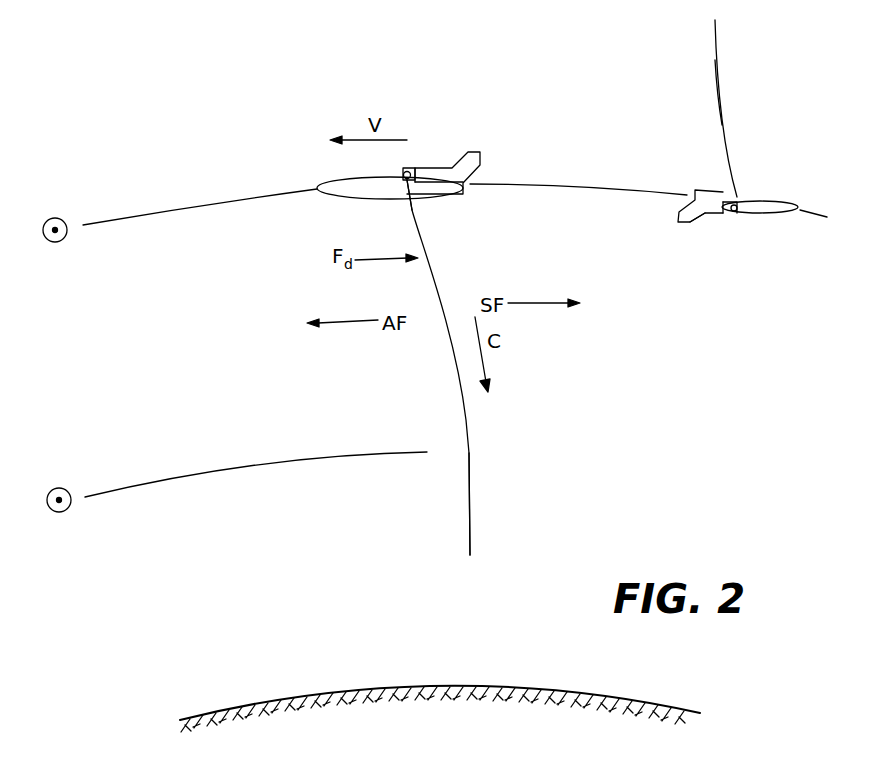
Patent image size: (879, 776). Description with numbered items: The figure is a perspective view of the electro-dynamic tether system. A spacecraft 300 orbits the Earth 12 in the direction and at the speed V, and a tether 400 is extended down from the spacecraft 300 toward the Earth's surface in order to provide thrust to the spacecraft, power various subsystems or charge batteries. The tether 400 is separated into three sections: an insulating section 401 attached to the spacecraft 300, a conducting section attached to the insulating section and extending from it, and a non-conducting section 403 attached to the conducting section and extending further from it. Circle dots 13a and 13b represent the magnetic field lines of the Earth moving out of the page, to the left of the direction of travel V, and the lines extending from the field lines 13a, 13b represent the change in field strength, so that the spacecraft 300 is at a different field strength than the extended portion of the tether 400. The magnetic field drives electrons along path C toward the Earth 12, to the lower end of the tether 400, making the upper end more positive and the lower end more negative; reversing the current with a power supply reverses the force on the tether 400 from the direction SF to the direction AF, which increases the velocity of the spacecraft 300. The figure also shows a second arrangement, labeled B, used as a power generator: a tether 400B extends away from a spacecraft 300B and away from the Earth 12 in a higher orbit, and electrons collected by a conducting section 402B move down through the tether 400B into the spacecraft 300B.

The Earth 12 is at (343, 690).
The magnetic field line 13a is at (64, 221).
The magnetic field line 13b is at (68, 491).
The spacecraft 300 is at (502, 136).
The spacecraft 300B is at (772, 192).
The electro-dynamic tether 400 is at (435, 342).
The tether 400B is at (783, 95).
The insulating section 401 is at (417, 216).
The conducting section 402B is at (717, 115).
The non-conducting section 403 is at (470, 453).
The position B is at (712, 232).